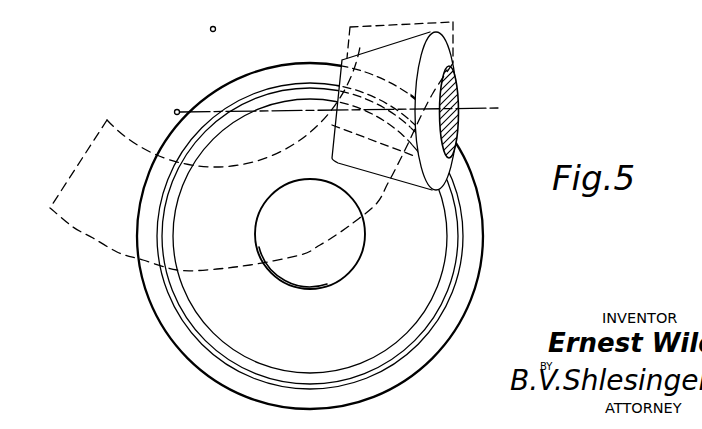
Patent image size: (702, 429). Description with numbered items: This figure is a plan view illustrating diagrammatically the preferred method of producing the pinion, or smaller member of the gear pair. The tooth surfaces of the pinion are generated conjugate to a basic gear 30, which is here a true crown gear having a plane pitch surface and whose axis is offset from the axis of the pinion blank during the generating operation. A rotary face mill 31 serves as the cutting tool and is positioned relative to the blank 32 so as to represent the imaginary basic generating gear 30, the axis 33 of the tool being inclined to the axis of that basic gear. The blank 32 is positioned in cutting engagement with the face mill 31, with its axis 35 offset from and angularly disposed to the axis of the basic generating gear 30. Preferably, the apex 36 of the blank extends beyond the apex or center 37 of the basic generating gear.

The basic gear 30 is at (92, 225).
The face mill 31 is at (463, 277).
The blank 32 is at (432, 52).
The axis of the tool 33 is at (308, 232).
The axis of the blank 35 is at (473, 105).
The apex of the blank 36 is at (177, 109).
The apex or center of the basic generating gear 37 is at (216, 29).